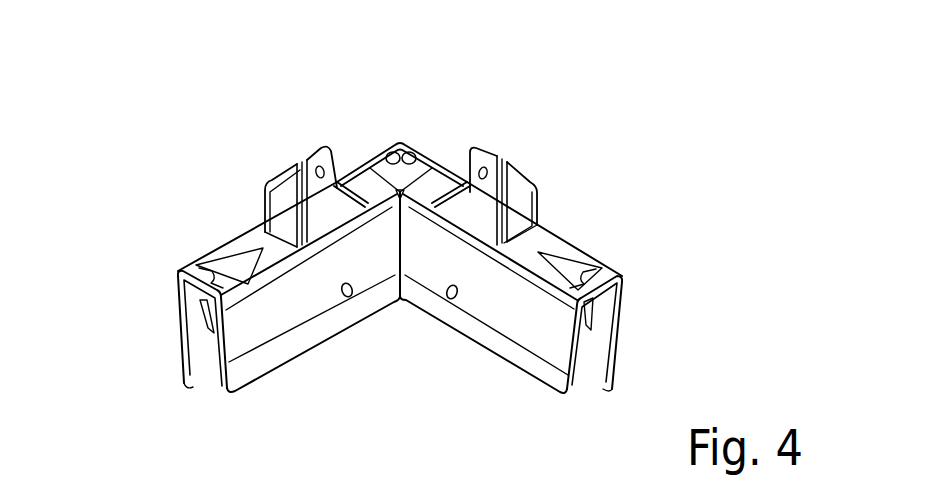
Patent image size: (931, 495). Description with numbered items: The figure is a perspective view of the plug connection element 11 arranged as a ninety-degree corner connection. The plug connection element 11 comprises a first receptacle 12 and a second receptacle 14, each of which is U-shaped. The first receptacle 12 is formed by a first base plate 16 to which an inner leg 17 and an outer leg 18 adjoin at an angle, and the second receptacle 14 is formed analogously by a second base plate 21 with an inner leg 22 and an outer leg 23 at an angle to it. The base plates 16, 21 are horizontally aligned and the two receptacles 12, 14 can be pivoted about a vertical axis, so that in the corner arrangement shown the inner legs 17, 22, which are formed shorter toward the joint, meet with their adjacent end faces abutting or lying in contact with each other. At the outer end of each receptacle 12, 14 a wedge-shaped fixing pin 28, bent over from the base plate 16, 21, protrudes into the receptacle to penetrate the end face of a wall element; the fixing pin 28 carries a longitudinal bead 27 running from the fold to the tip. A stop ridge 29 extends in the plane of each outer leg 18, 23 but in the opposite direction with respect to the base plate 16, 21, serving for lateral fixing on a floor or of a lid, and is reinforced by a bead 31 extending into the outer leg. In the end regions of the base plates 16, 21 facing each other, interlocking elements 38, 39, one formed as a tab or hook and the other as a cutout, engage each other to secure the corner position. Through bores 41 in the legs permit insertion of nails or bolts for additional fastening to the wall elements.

The plug connection element 11 is at (416, 239).
The first receptacle 12 is at (243, 259).
The second receptacle 14 is at (573, 312).
The first base plate 16 is at (254, 240).
The inner leg 17 is at (277, 313).
The outer leg 18 is at (190, 297).
The second base plate 21 is at (549, 240).
The inner leg 22 is at (562, 348).
The outer leg 23 is at (621, 319).
The longitudinal bead 27 is at (207, 258).
The fixing pin 28 is at (210, 305).
The stop ridge 29 is at (404, 154).
The bead 31 is at (298, 163).
The interlocking element 38 is at (403, 134).
The interlocking element 39 is at (409, 158).
The through bores 41 is at (451, 300).